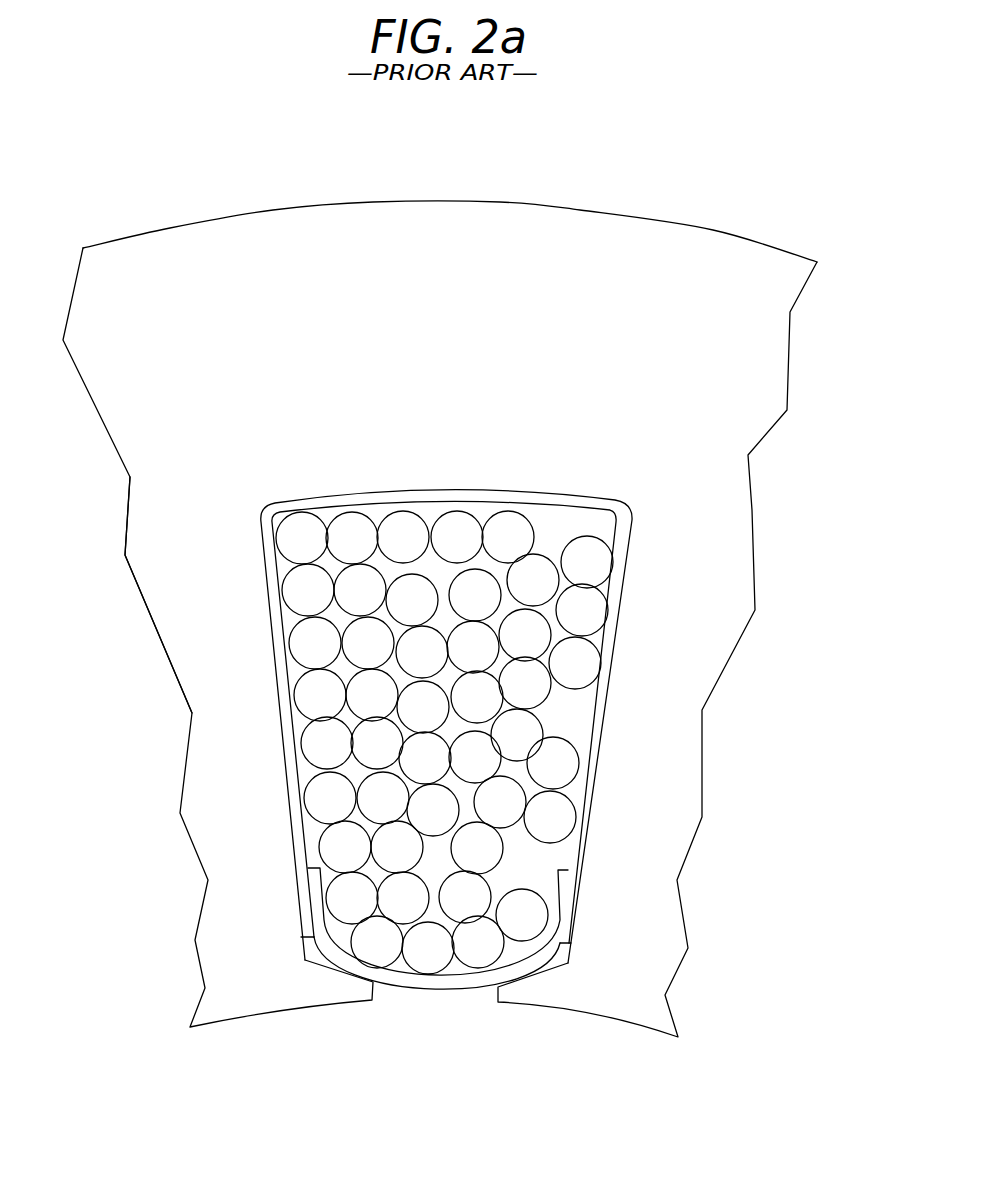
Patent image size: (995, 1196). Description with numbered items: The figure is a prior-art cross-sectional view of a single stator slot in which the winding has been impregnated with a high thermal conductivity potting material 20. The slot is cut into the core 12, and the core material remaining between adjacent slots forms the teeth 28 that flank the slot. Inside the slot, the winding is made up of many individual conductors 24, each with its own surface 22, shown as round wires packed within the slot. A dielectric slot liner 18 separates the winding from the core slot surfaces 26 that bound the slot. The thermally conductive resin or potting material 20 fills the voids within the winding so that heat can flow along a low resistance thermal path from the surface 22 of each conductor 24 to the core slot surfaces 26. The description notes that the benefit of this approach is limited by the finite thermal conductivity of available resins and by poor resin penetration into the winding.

The core 12 is at (620, 288).
The dielectric slot liner 18 is at (617, 625).
The potting material 20 is at (537, 855).
The surface 22 is at (563, 737).
The conductor 24 is at (375, 745).
The core slot surface 26 is at (297, 650).
The tooth 28 is at (182, 615).